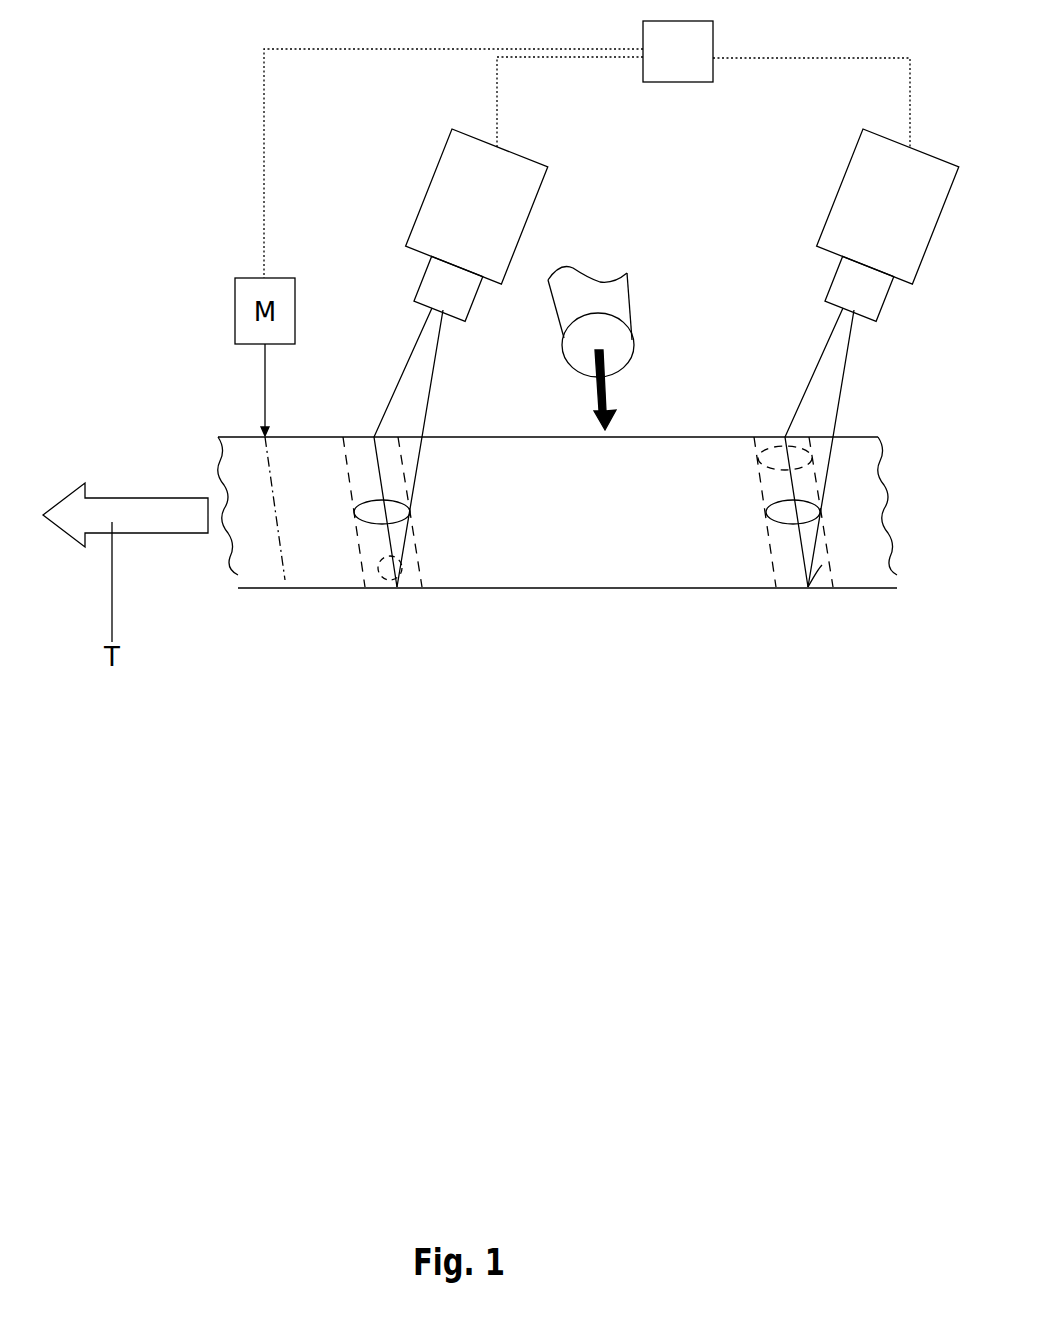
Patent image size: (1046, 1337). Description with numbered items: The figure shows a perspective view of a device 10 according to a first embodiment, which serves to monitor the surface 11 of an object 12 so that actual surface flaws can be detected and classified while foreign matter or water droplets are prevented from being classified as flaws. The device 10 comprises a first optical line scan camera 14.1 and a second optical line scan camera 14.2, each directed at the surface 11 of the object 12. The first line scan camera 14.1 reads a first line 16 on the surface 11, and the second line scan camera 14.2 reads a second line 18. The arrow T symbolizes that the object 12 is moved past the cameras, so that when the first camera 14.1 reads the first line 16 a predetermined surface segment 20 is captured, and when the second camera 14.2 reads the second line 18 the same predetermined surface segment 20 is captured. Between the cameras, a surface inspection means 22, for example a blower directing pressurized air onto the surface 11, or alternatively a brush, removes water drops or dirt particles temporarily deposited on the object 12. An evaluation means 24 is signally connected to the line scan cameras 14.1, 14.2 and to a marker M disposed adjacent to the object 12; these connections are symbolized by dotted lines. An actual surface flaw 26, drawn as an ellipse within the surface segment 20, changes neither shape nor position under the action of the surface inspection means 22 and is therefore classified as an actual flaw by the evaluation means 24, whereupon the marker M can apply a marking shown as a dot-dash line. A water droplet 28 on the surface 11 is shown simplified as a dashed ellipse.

The device 10 is at (130, 105).
The surface 11 is at (506, 567).
The object 12 is at (561, 590).
The first optical line scan camera 14.1 is at (868, 188).
The second optical line scan camera 14.2 is at (507, 188).
The first line 16 is at (803, 560).
The second line 18 is at (570, 475).
The predetermined surface segment 20 is at (370, 573).
The surface inspection means 22 is at (600, 300).
The evaluation means 24 is at (663, 66).
The surface flaw 26 is at (766, 512).
The water droplet 28 is at (408, 570).